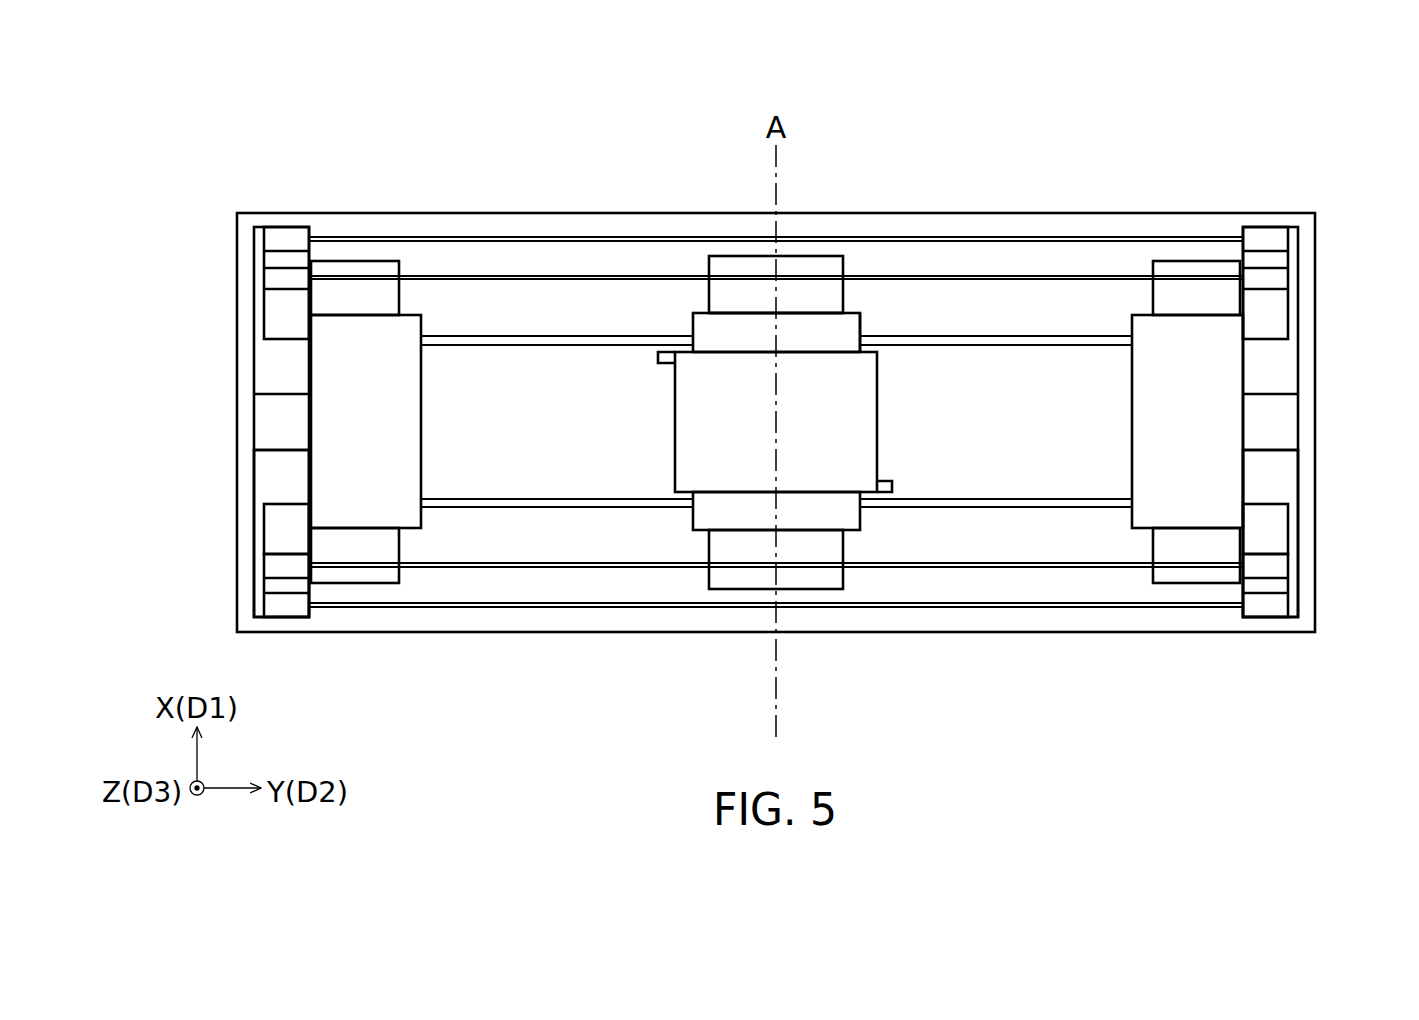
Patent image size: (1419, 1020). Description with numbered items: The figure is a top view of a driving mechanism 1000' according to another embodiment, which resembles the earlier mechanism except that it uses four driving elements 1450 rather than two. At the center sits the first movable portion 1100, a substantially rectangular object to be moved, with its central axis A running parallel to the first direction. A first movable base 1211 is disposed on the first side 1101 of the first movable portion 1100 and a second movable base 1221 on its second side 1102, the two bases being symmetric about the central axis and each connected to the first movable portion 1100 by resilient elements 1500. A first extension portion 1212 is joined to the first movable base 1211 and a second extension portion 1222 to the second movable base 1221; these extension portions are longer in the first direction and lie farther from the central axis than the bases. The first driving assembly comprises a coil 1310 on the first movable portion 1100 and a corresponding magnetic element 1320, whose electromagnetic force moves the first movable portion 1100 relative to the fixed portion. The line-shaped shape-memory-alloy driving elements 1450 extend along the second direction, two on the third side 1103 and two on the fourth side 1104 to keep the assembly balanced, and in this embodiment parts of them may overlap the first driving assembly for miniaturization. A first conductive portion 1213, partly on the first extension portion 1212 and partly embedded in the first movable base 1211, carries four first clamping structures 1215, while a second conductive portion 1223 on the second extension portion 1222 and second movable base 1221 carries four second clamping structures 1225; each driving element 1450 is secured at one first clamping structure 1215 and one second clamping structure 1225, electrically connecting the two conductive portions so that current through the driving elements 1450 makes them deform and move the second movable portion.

The driving mechanism 1000' is at (724, 334).
The first movable portion 1100 is at (746, 519).
The first side 1101 is at (863, 326).
The second side 1102 is at (690, 326).
The third side 1103 is at (811, 311).
The fourth side 1104 is at (811, 532).
The coil 1310 is at (862, 412).
The magnetic element 1320 is at (734, 264).
The driving elements 1450 is at (977, 240).
The resilient elements 1500 is at (549, 505).
The first movable base 1211 is at (1210, 415).
The first extension portion 1212 is at (1278, 368).
The first conductive portion 1213 is at (1278, 316).
The first clamping structures 1215 is at (1266, 237).
The second movable base 1221 is at (337, 424).
The second extension portion 1222 is at (274, 368).
The second conductive portion 1223 is at (274, 528).
The second clamping structures 1225 is at (285, 237).